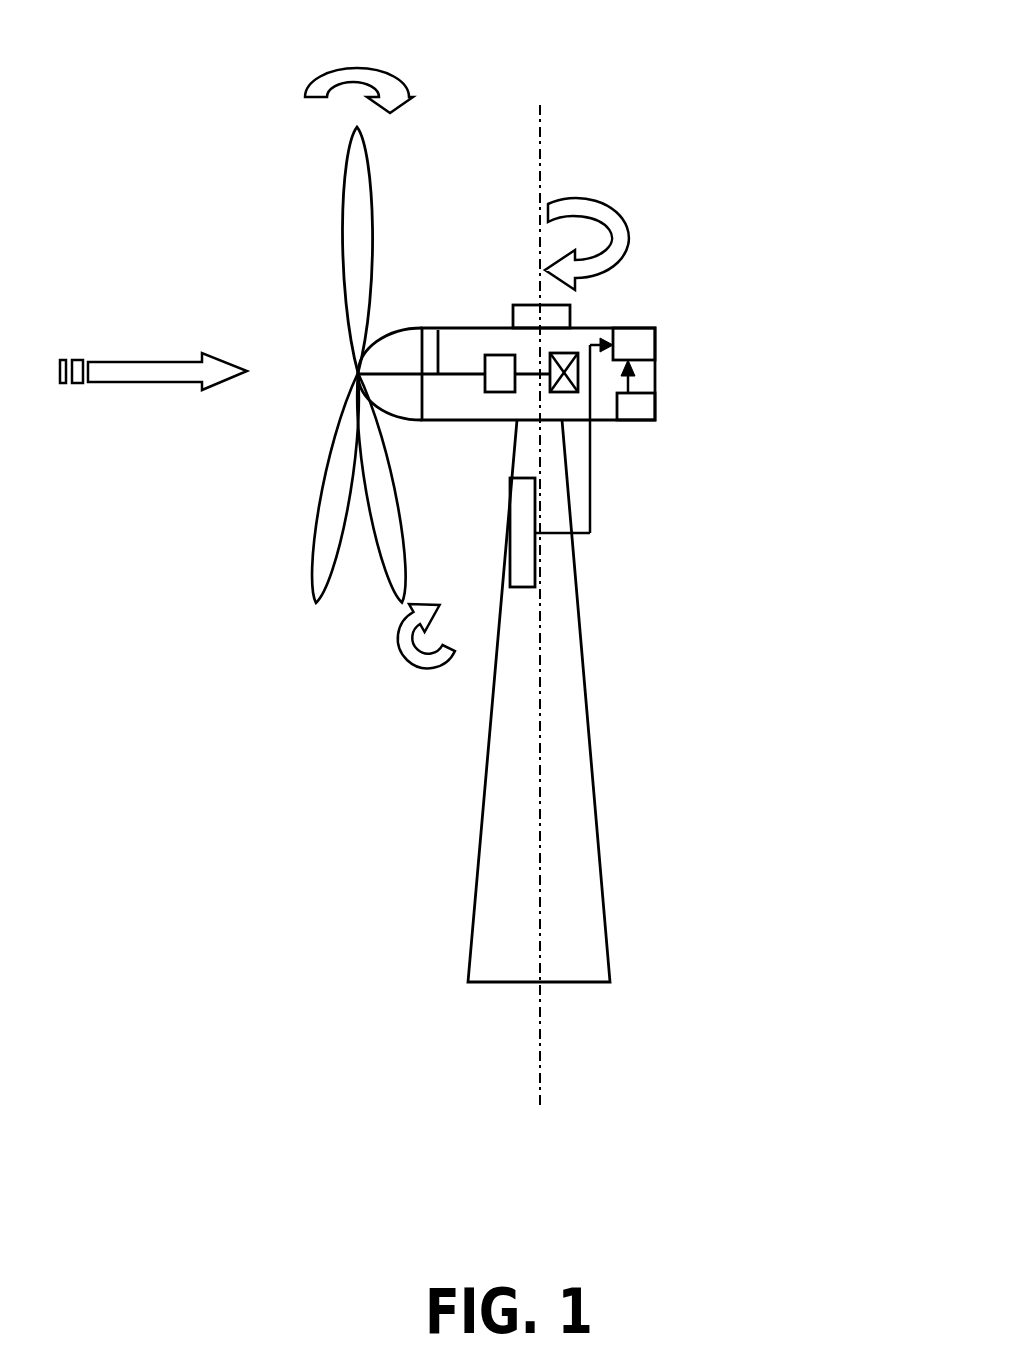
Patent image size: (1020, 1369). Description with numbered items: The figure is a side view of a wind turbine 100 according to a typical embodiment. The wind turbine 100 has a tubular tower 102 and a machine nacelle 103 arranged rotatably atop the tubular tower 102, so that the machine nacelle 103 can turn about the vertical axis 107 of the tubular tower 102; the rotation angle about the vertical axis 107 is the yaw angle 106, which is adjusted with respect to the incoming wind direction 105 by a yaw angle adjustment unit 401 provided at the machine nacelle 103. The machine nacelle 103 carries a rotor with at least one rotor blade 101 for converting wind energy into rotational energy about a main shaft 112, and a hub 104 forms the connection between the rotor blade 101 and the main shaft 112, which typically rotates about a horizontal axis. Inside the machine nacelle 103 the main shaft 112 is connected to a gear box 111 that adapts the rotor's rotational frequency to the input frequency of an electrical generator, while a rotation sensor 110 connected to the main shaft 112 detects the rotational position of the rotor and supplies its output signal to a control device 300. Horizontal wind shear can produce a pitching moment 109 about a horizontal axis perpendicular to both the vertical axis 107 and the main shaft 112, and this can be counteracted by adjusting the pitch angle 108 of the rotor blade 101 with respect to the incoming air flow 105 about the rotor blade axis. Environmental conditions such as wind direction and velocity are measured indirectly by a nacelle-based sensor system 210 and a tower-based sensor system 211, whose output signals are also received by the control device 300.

The wind turbine 100 is at (670, 87).
The rotor blade 101 is at (343, 277).
The tubular tower 102 is at (588, 735).
The machine nacelle 103 is at (655, 380).
The hub 104 is at (408, 328).
The incoming wind direction 105 is at (202, 389).
The yaw angle 106 is at (630, 242).
The vertical axis 107 is at (540, 120).
The pitch angle 108 is at (384, 647).
The pitching moment 109 is at (305, 95).
The rotation sensor 110 is at (497, 392).
The gear box 111 is at (565, 390).
The main shaft 112 is at (438, 330).
The nacelle-based sensor system 210 is at (642, 408).
The tower-based sensor system 211 is at (523, 545).
The control device 300 is at (637, 343).
The yaw angle adjustment unit 401 is at (557, 317).